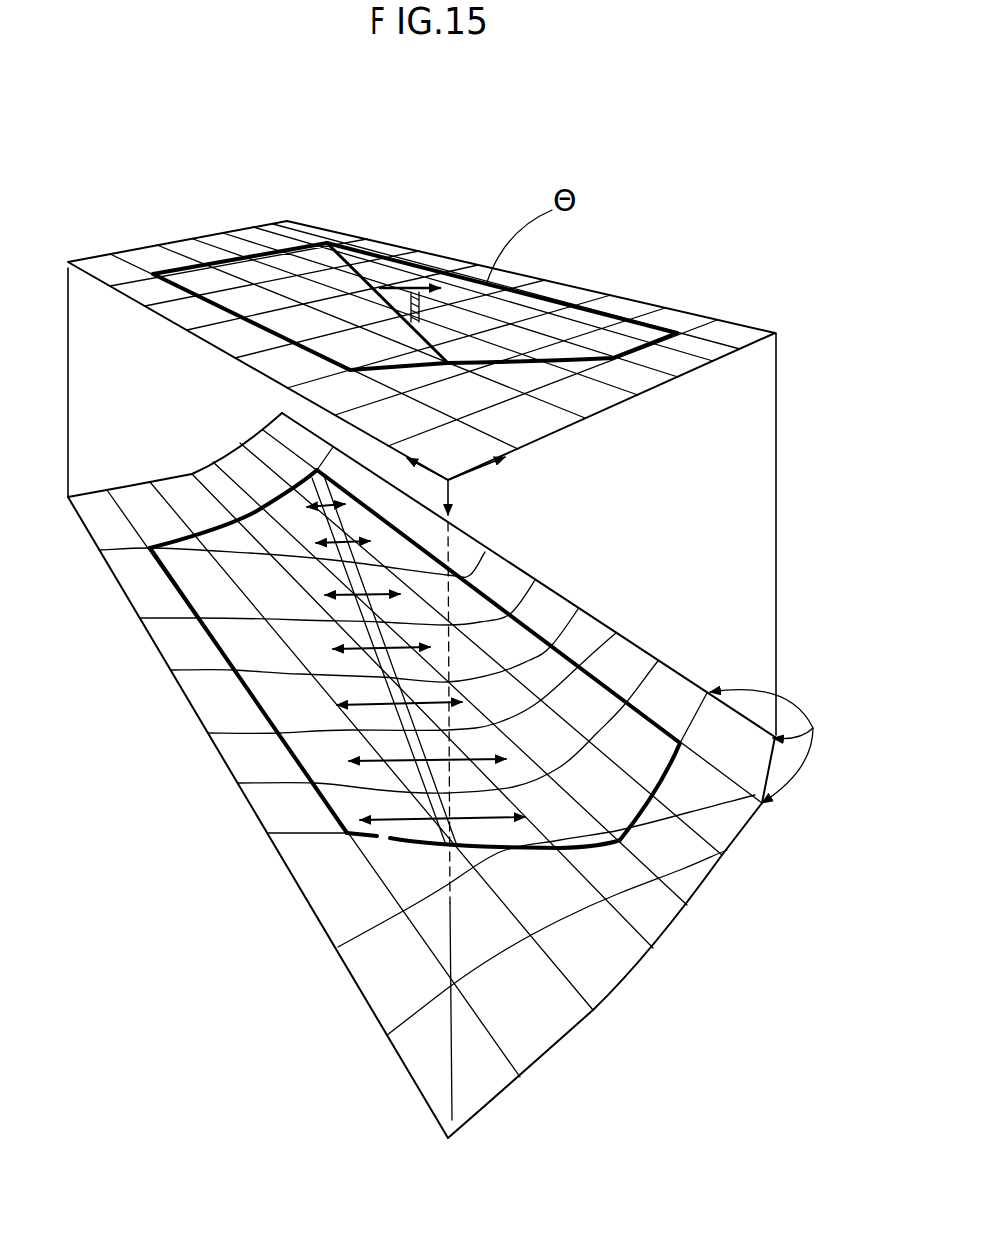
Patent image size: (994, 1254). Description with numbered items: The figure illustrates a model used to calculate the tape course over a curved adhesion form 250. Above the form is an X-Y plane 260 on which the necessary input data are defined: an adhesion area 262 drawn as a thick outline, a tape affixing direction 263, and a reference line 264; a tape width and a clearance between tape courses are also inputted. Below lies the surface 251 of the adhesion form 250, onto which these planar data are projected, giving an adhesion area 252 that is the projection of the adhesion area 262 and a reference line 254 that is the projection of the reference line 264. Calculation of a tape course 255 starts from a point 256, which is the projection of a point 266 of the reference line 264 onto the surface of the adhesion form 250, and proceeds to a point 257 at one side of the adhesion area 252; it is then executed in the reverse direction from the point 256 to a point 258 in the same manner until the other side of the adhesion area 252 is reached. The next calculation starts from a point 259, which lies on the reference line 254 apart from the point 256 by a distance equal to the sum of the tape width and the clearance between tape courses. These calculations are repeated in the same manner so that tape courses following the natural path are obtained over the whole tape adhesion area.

The adhesion form 250 is at (716, 889).
The surface of adhesion form 251 is at (792, 746).
The adhesion area 252 is at (555, 639).
The reference line 254 is at (298, 762).
The tape course 255 is at (522, 640).
The point 256 is at (454, 560).
The point 257 is at (386, 687).
The point 258 is at (352, 637).
The point 259 is at (345, 833).
The X-Y plane 260 is at (726, 320).
The adhesion area 262 is at (483, 276).
The tape affixing direction 263 is at (398, 281).
The reference line 264 is at (455, 348).
The point 266 is at (425, 360).